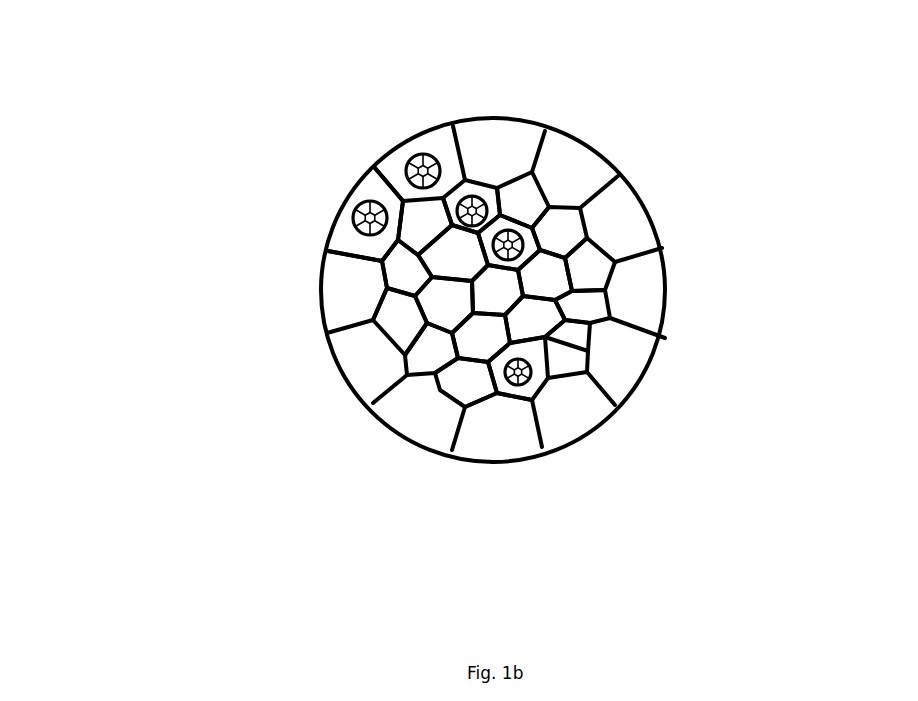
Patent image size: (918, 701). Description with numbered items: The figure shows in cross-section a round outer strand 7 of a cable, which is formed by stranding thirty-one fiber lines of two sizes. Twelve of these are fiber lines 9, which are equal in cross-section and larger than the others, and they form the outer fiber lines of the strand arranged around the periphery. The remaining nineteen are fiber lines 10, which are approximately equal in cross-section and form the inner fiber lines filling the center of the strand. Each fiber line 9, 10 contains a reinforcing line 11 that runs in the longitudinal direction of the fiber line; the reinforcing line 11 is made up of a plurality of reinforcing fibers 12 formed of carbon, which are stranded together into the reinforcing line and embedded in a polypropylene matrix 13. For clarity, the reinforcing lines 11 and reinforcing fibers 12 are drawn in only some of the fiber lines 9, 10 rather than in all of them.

The outer strand 7 is at (318, 393).
The fiber line 9 is at (403, 140).
The fiber line 10 is at (512, 208).
The reinforcing line 11 is at (372, 168).
The reinforcing fiber 12 is at (412, 158).
The polypropylene matrix 13 is at (463, 180).